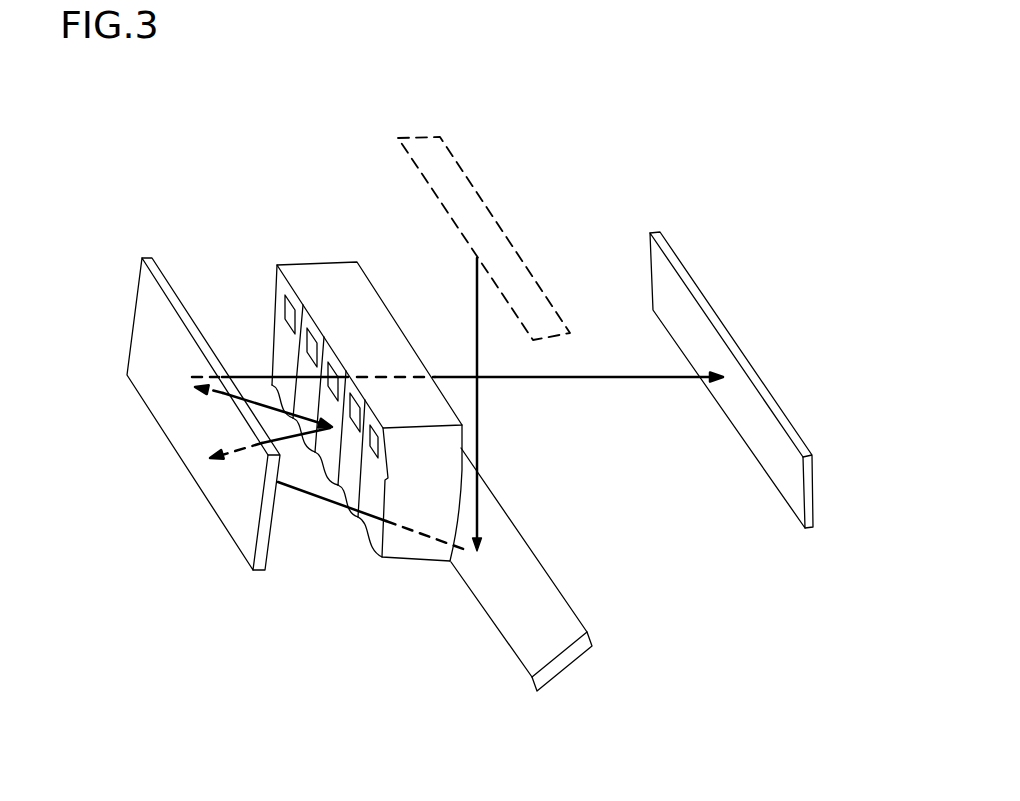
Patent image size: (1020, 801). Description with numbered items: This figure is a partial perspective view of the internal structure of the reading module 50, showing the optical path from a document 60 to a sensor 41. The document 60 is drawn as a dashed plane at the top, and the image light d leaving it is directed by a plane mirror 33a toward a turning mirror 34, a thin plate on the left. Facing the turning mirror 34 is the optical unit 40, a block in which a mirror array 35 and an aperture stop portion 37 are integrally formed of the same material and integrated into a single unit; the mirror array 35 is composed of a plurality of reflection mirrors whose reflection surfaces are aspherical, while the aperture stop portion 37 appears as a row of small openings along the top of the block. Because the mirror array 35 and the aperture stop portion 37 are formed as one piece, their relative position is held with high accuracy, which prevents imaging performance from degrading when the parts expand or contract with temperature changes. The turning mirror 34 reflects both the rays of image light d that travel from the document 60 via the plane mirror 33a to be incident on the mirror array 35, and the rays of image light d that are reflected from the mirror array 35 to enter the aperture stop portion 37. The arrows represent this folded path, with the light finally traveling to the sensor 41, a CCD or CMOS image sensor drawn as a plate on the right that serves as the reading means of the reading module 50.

The reading module 50 is at (675, 165).
The turning mirror 34 is at (162, 402).
The optical unit 40 is at (252, 196).
The aperture stop portion 37 is at (277, 294).
The mirror array 35 is at (277, 368).
The plane mirror 33a is at (563, 610).
The sensor 41 is at (792, 425).
The document 60 is at (483, 205).
The image light d is at (477, 305).